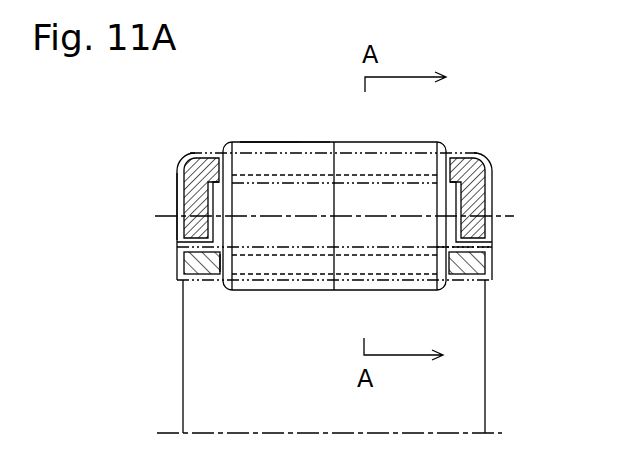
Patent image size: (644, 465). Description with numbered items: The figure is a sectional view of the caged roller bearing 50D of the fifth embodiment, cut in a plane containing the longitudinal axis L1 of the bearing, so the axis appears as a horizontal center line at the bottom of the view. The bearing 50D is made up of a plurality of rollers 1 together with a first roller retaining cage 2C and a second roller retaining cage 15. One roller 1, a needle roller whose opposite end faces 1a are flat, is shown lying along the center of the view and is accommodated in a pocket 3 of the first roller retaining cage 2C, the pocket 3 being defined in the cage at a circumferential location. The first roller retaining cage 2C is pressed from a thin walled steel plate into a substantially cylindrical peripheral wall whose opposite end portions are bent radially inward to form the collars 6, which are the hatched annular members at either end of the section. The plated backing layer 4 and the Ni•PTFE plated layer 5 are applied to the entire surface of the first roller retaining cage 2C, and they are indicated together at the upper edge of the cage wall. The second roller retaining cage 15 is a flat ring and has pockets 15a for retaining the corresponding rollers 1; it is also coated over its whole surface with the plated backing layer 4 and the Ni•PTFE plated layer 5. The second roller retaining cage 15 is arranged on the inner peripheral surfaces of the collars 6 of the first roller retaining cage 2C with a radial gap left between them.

The roller 1 is at (392, 142).
The end face of roller 1a is at (490, 247).
The first roller retaining cage 2C is at (492, 173).
The pocket 3 is at (313, 153).
The plated backing layer 4 is at (277, 143).
The Ni•PTFE plated layer 5 is at (265, 99).
The collar 6 is at (180, 197).
The second roller retaining cage 15 is at (182, 259).
The pocket of second roller retaining cage 15a is at (220, 265).
The caged roller bearing 50D is at (483, 119).
The longitudinal axis L1 is at (427, 434).